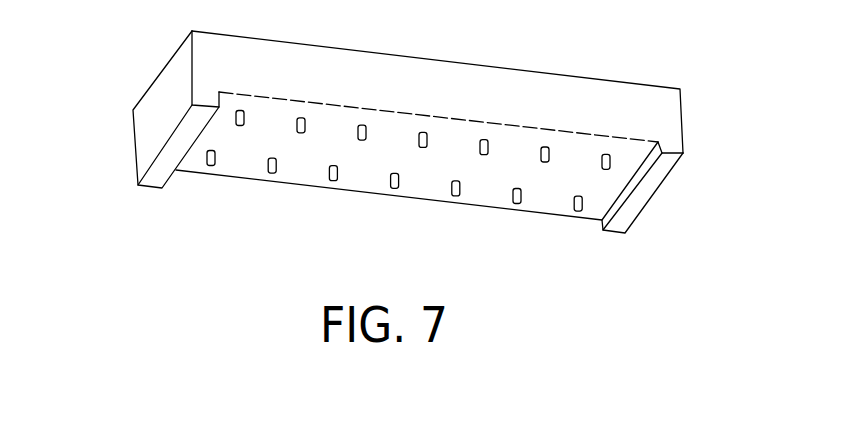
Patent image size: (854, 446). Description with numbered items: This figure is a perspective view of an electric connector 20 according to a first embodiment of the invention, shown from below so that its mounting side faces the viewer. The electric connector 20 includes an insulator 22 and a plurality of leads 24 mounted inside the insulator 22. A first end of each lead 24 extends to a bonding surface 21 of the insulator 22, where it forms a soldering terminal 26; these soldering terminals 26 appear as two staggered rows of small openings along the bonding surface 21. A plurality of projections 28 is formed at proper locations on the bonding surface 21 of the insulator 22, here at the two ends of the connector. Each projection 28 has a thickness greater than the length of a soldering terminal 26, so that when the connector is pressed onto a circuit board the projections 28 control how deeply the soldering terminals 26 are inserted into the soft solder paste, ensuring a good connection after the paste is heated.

The electric connector 20 is at (415, 165).
The bonding surface 21 is at (429, 160).
The insulator 22 is at (160, 97).
The leads 24 is at (399, 194).
The soldering terminal 26 is at (332, 185).
The projections 28 is at (637, 198).